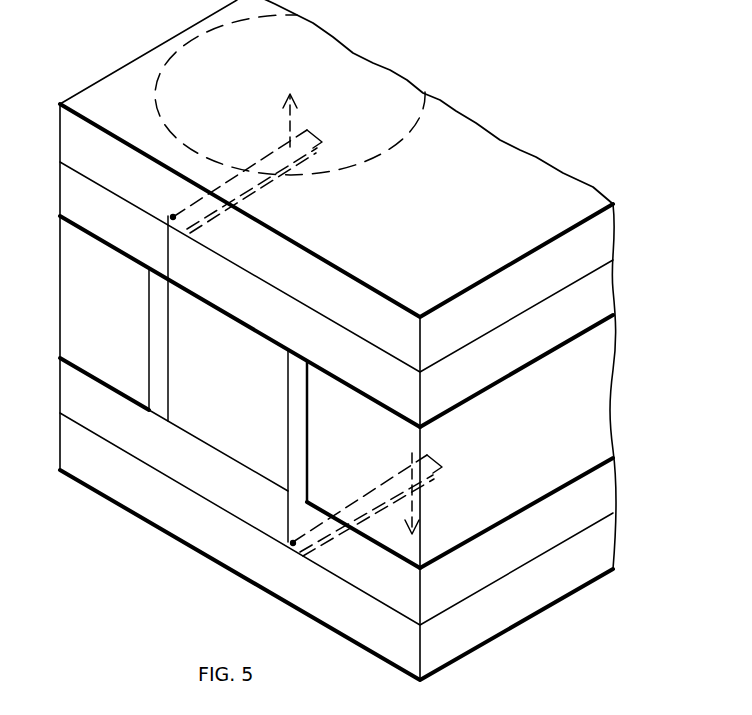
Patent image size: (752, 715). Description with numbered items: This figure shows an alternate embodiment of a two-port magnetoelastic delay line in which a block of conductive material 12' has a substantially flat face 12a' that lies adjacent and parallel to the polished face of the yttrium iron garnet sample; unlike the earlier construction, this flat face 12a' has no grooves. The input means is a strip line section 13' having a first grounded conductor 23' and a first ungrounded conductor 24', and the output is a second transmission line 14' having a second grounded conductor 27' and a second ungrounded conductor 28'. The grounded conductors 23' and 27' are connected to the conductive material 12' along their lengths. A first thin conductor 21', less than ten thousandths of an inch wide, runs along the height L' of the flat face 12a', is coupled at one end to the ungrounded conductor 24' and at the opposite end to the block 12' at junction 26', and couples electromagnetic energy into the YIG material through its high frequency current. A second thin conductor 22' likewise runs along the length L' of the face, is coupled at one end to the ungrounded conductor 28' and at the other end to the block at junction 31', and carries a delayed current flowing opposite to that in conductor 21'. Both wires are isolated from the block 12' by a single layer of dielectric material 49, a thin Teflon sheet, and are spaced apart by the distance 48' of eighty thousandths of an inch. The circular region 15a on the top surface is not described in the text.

The block of conductive material 12' is at (637, 386).
The flat face 12a' is at (240, 386).
The strip line section 13' is at (369, 238).
The second transmission line 14' is at (369, 546).
The circular region on top surface 15a is at (392, 144).
The first thin conductor 21' is at (193, 318).
The second thin conductor 22' is at (266, 445).
The first grounded conductor 23' is at (516, 371).
The first ungrounded conductor 24' is at (247, 163).
The junction 26' is at (218, 379).
The second grounded conductor 27' is at (516, 513).
The second ungrounded conductor 28' is at (367, 504).
The junction 31' is at (321, 420).
The distance 48' is at (228, 376).
The layer of dielectric material 49 is at (243, 323).
The height of the flat face L' is at (37, 274).